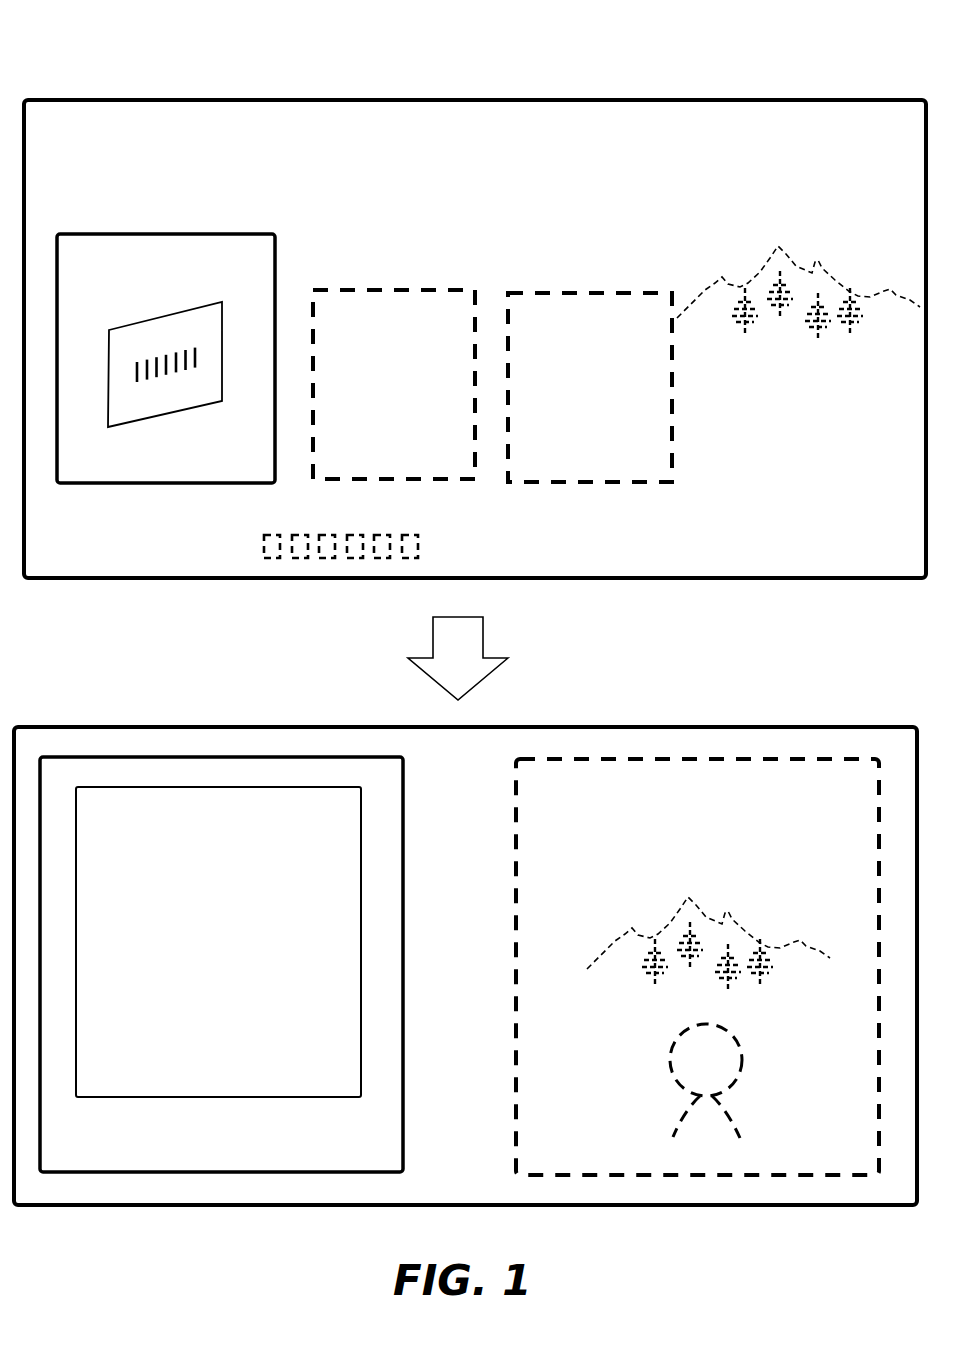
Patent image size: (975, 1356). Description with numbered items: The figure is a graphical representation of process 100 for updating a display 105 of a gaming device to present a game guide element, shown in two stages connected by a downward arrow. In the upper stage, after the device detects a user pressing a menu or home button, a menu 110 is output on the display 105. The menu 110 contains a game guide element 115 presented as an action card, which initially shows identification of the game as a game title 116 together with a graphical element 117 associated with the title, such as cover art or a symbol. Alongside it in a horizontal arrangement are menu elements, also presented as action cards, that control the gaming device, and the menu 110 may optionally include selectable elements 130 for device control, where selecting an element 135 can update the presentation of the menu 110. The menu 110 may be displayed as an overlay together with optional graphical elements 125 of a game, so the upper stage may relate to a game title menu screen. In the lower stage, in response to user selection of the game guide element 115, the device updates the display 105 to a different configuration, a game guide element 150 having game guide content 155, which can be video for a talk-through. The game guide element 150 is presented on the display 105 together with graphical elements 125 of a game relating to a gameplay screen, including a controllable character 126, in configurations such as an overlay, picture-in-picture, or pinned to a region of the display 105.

The process 100 is at (86, 61).
The display 105 is at (803, 100).
The menu 110 is at (96, 207).
The game guide element 115 is at (252, 236).
The game title 116 is at (232, 278).
The graphical element 117 is at (112, 352).
The graphical elements of a game 125 is at (789, 229).
The controllable character 126 is at (738, 1072).
The selectable elements 130 is at (347, 527).
The element 135 is at (415, 545).
The game guide element 150 is at (269, 964).
The game guide content 155 is at (361, 872).